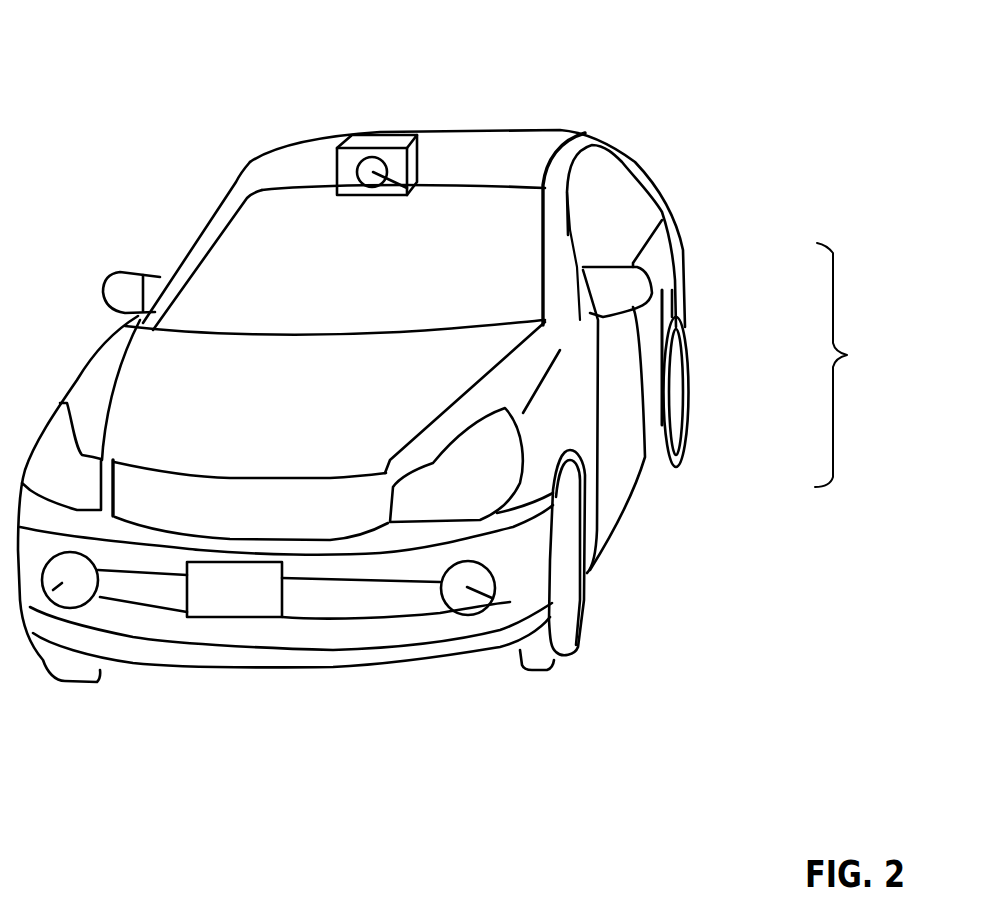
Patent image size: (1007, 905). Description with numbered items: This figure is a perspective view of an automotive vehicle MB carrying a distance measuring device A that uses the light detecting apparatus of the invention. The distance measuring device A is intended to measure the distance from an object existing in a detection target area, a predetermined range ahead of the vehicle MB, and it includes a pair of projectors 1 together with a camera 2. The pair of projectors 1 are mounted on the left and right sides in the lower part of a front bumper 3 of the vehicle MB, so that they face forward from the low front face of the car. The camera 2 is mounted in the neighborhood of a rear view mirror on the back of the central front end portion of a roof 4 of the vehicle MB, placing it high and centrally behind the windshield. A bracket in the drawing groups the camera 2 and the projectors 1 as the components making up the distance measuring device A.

The vehicle MB is at (245, 165).
The projectors 1 is at (74, 577).
The camera 2 is at (410, 190).
The front bumper 3 is at (373, 620).
The roof 4 is at (463, 146).
The distance measuring device A is at (850, 365).